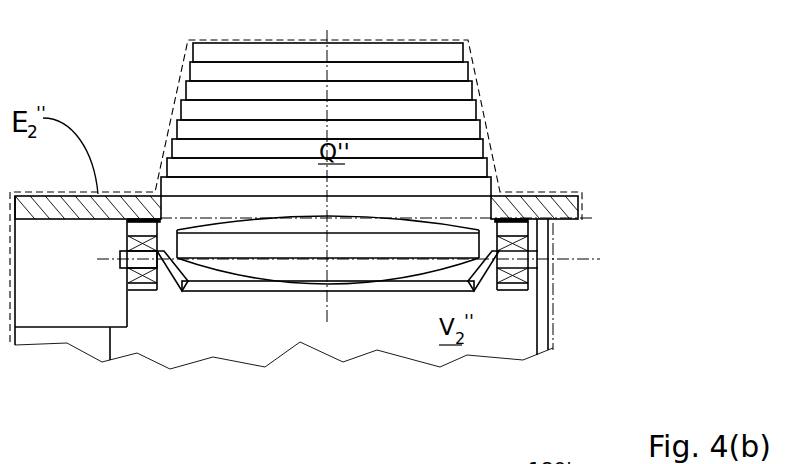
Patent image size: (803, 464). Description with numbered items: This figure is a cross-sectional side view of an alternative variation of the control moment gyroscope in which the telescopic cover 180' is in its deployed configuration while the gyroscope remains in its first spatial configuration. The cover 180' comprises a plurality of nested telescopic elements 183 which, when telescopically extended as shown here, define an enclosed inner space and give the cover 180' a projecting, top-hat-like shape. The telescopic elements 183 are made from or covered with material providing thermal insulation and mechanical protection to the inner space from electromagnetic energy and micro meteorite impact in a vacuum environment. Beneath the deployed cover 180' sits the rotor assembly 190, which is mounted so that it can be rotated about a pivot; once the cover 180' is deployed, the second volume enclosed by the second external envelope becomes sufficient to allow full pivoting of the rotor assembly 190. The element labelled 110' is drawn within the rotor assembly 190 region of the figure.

The telescopic cover 180' is at (381, 101).
The nested telescopic elements 183 is at (488, 167).
The lens 110' is at (424, 248).
The rotor assembly 190 is at (400, 250).